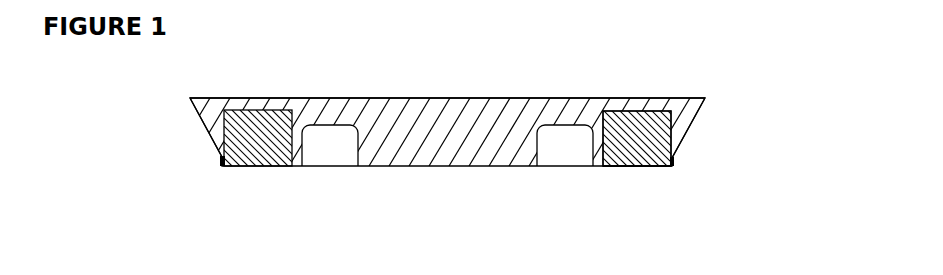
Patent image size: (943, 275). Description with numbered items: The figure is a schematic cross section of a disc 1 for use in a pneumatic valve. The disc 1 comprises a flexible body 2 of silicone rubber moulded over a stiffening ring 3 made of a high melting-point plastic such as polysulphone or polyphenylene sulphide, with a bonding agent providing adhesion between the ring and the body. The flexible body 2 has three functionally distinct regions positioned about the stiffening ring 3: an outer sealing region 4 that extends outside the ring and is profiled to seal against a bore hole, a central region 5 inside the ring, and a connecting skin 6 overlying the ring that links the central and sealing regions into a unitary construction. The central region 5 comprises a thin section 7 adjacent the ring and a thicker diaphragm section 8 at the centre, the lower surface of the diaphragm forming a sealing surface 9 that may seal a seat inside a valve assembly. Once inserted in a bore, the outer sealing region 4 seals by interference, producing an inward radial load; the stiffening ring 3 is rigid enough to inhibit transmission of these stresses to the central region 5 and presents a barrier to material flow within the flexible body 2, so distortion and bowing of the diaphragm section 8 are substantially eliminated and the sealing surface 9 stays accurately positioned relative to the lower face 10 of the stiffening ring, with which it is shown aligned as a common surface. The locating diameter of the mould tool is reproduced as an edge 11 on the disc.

The disc 1 is at (126, 123).
The flexible body 2 is at (453, 121).
The stiffening ring 3 is at (637, 154).
The outer sealing region 4 is at (702, 117).
The central region 5 is at (597, 180).
The connecting skin 6 is at (653, 106).
The thin section 7 is at (331, 108).
The diaphragm section 8 is at (414, 105).
The sealing surface 9 is at (413, 166).
The lower face of the stiffening ring 10 is at (617, 157).
The edge 11 is at (219, 157).